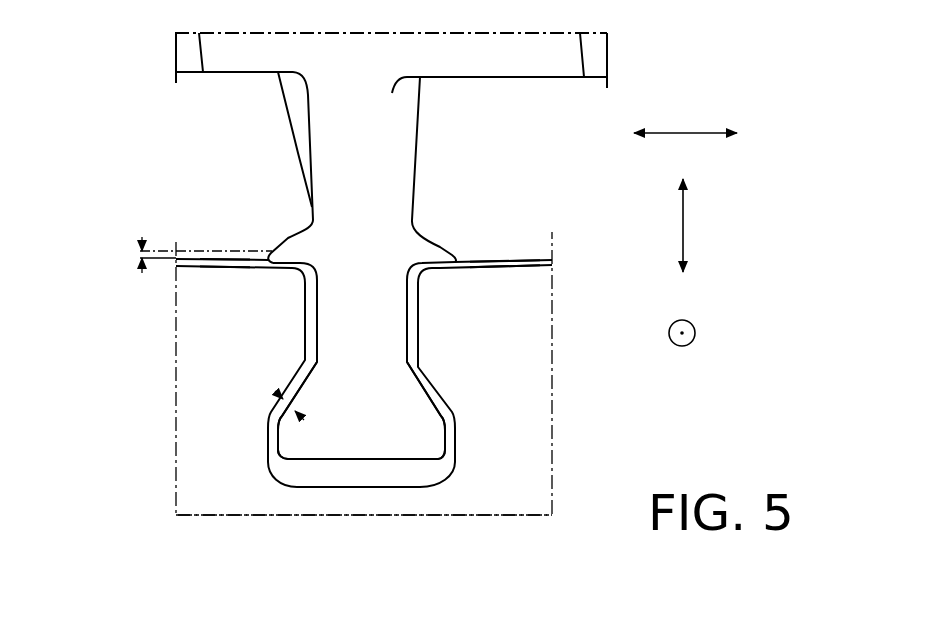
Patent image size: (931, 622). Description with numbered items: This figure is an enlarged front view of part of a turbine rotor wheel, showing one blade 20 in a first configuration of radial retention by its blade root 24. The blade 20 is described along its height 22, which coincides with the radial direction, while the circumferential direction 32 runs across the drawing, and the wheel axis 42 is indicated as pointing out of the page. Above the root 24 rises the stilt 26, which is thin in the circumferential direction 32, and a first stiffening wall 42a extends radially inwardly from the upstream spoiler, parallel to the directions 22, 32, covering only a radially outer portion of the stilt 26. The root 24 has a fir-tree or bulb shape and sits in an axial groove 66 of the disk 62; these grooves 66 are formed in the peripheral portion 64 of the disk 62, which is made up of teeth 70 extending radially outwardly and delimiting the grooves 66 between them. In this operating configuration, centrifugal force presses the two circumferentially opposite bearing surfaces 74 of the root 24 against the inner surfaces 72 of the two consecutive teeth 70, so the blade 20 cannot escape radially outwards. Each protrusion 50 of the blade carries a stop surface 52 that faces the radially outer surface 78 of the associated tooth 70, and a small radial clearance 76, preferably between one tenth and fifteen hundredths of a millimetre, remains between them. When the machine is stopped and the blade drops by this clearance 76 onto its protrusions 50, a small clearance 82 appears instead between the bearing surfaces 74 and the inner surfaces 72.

The blade 20 is at (609, 59).
The first stiffening wall 42a is at (512, 75).
The stilt 26 is at (337, 131).
The protrusion 50 is at (287, 237).
The blade root 24 is at (425, 437).
The stop surface 52 is at (277, 274).
The radially outer surface 78 is at (222, 258).
The tooth 70 is at (223, 323).
The radial clearance 76 is at (134, 251).
The bearing surface 74 is at (300, 386).
The clearance 82 is at (276, 392).
The inner surface 72 is at (305, 403).
The axial groove 66 is at (363, 477).
The peripheral portion 64 is at (554, 406).
The disk 62 is at (513, 518).
The circumferential direction 32 is at (677, 133).
The height direction 22 is at (683, 225).
The axis direction 42 is at (684, 331).